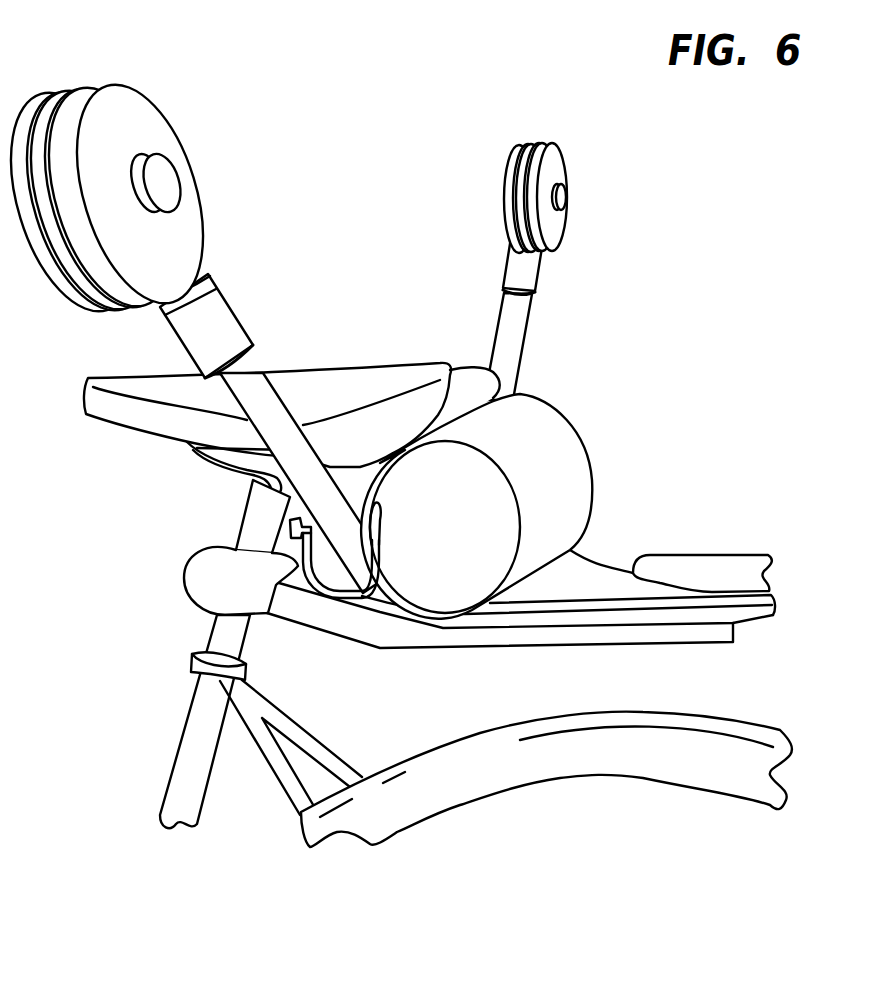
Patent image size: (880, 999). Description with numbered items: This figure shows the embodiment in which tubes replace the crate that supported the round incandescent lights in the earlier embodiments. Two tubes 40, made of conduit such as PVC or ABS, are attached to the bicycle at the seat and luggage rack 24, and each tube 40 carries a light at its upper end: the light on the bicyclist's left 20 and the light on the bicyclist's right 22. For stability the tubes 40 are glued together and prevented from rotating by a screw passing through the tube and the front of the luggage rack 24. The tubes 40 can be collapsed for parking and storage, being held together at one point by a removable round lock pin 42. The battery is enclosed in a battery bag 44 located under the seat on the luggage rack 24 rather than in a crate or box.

The light on bicyclist's left 20 is at (178, 171).
The light on bicyclist's right 22 is at (565, 190).
The luggage rack 24 is at (478, 652).
The tube 40 is at (530, 330).
The pin 42 is at (329, 604).
The battery bag 44 is at (565, 455).